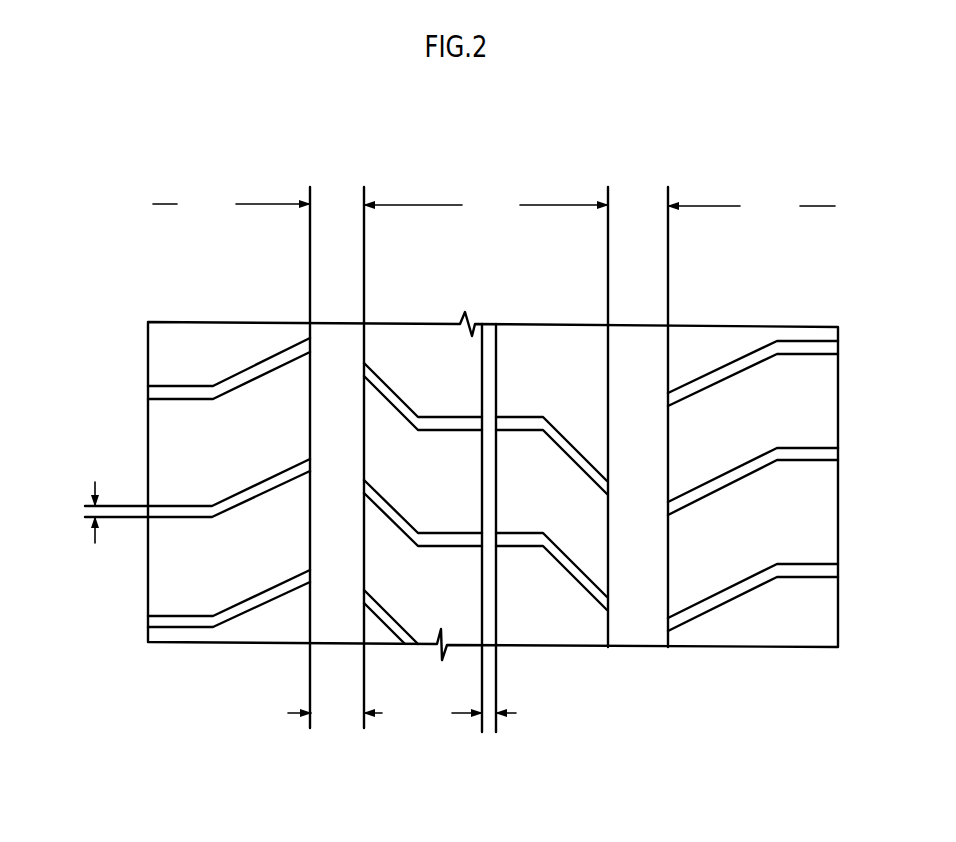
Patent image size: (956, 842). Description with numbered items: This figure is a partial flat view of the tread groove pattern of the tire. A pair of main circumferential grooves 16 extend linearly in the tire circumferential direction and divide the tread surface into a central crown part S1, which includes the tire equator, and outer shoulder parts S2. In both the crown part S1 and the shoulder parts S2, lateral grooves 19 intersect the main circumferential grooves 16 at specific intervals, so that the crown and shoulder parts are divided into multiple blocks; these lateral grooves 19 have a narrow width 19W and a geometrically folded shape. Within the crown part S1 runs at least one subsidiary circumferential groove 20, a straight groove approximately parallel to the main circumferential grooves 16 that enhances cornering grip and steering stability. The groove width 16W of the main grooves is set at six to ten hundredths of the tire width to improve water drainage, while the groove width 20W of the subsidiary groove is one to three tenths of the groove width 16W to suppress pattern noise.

The main circumferential groove 16 is at (337, 320).
The subsidiary circumferential groove 20 is at (497, 324).
The lateral groove 19 is at (177, 504).
The width of lateral groove 19W is at (93, 517).
The groove width of main circumferential groove 16W is at (335, 740).
The groove width of subsidiary circumferential groove 20W is at (494, 743).
The crown part S1 is at (486, 210).
The shoulder part S2 is at (494, 209).